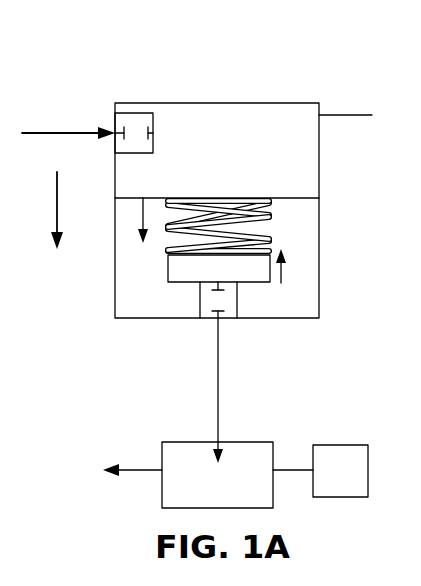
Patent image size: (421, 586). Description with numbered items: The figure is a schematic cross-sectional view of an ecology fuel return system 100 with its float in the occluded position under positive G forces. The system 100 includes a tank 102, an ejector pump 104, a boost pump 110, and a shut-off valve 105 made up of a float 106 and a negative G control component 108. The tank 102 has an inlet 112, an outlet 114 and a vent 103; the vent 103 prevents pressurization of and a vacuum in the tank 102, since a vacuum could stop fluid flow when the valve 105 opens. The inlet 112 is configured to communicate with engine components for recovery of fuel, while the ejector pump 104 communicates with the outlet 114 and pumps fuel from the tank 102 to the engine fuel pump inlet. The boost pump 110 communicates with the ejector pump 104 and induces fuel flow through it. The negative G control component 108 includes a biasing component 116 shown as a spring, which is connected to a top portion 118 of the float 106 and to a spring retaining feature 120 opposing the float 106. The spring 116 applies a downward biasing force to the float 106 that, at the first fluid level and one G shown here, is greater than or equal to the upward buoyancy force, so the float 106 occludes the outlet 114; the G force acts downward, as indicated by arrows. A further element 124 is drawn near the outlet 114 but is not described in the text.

The ecology fuel return system 100 is at (298, 88).
The tank 102 is at (319, 155).
The vent 103 is at (343, 113).
The ejector pump 104 is at (233, 495).
The shut-off valve 105 is at (256, 292).
The float 106 is at (234, 279).
The negative G control component 108 is at (298, 206).
The boost pump 110 is at (357, 480).
The inlet 112 is at (110, 128).
The outlet 114 is at (220, 320).
The biasing component 116 is at (288, 237).
The top portion of float 118 is at (170, 244).
The spring retaining feature 120 is at (282, 198).
The seal 124 is at (200, 284).